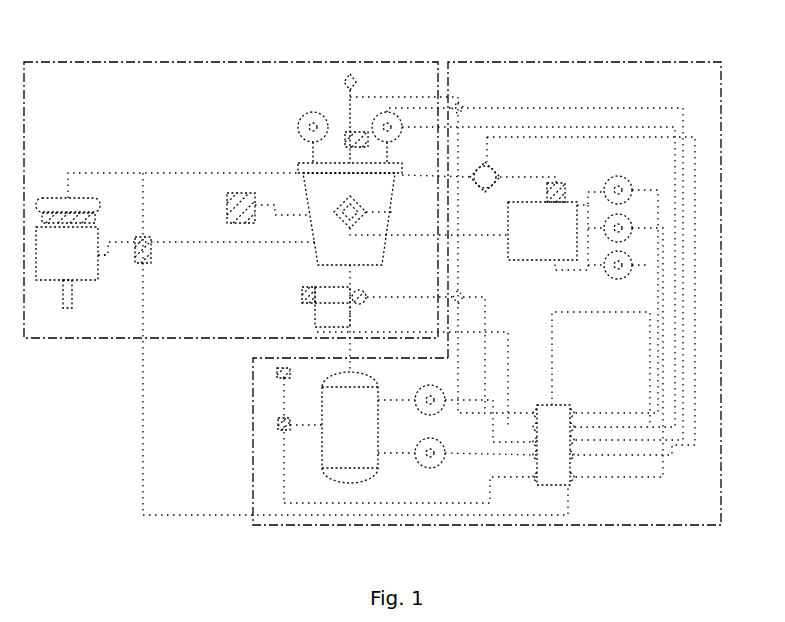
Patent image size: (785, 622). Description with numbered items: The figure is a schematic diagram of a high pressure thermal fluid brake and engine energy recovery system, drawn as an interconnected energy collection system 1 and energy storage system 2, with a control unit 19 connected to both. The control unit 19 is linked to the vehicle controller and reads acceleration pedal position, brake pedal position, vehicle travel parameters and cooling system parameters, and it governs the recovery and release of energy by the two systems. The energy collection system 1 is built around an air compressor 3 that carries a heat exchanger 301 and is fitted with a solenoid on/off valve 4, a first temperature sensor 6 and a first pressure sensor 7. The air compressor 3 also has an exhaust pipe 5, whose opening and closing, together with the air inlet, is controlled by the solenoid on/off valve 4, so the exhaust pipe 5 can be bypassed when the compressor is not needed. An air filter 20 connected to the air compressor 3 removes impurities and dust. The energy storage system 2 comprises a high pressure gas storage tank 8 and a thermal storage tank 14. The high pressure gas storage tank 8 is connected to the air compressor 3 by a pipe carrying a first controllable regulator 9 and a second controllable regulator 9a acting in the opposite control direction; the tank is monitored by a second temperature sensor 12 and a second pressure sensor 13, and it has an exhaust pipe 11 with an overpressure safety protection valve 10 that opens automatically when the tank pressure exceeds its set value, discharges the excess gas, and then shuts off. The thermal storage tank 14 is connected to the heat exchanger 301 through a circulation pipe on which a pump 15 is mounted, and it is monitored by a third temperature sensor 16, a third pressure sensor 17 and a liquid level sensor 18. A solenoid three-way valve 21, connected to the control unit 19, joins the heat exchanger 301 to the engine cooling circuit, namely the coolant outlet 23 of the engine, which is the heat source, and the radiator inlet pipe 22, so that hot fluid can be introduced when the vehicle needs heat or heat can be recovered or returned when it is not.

The energy collection system 1 is at (247, 77).
The energy storage system 2 is at (575, 72).
The air compressor 3 is at (327, 242).
The heat exchanger 301 is at (340, 215).
The solenoid on/off valve 4 is at (352, 136).
The exhaust pipe 5 is at (350, 92).
The first temperature sensor 6 is at (312, 122).
The first pressure sensor 7 is at (397, 125).
The high pressure gas storage tank 8 is at (343, 450).
The first controllable regulator 9 is at (352, 297).
The second controllable regulator 9a is at (310, 290).
The overpressure safety protection valve 10 is at (282, 423).
The exhaust pipe 11 is at (278, 377).
The second temperature sensor 12 is at (427, 407).
The second pressure sensor 13 is at (435, 460).
The thermal storage tank 14 is at (542, 245).
The pump 15 is at (493, 177).
The third temperature sensor 16 is at (620, 278).
The third pressure sensor 17 is at (620, 235).
The liquid level sensor 18 is at (622, 196).
The control unit 19 is at (552, 475).
The air filter 20 is at (227, 207).
The solenoid three-way valve 21 is at (143, 245).
The radiator inlet pipe 22 is at (68, 190).
The coolant outlet 23 is at (107, 254).